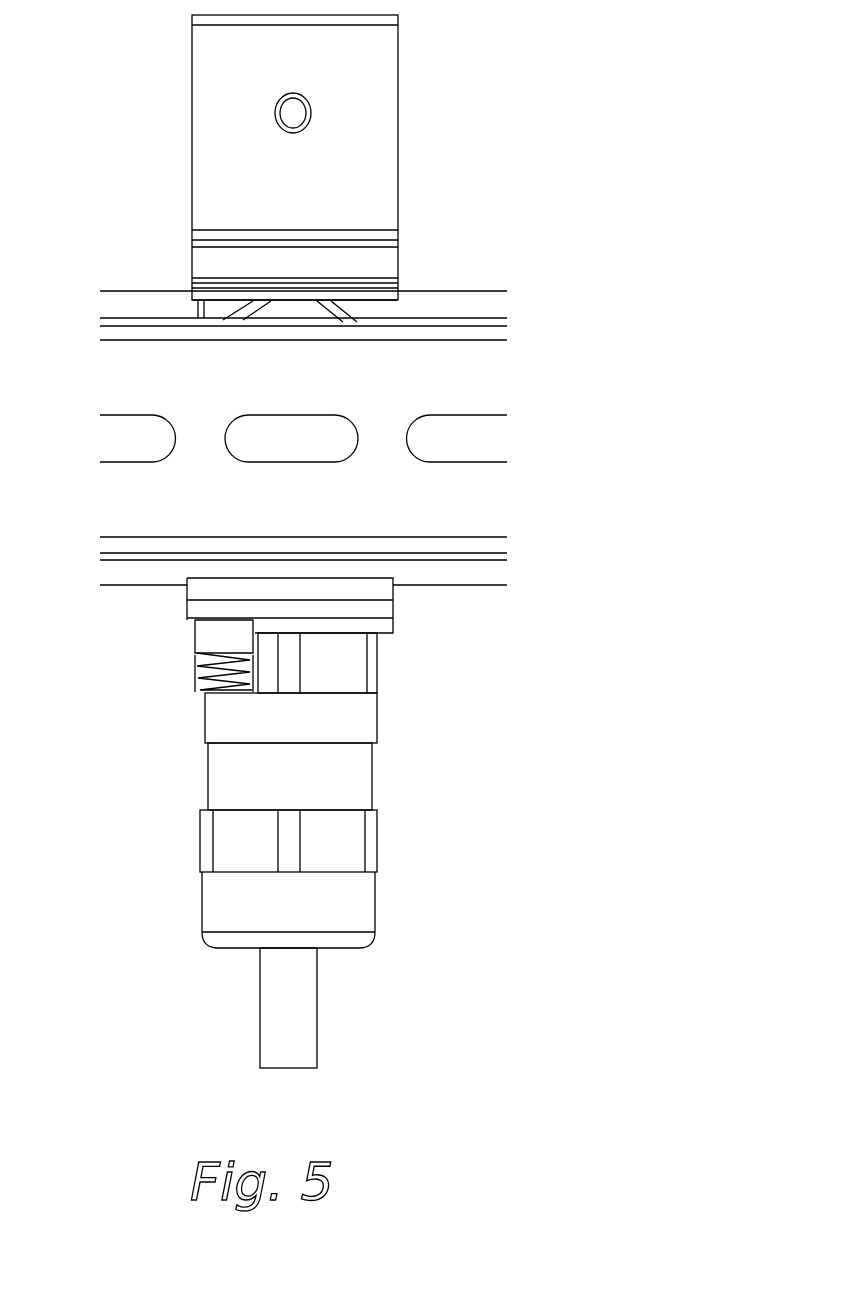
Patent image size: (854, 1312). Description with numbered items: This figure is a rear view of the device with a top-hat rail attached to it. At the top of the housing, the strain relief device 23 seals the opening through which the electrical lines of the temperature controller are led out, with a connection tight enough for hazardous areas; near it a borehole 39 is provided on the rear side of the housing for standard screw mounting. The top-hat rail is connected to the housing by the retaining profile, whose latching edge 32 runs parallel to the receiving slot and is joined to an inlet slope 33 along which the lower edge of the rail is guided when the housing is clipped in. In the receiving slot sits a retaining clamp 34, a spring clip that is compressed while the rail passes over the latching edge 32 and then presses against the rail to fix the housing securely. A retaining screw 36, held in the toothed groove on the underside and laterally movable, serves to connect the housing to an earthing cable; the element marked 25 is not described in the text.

The strain relief device 23 is at (377, 832).
The block 25 is at (221, 182).
The latching edge 32 is at (365, 580).
The inlet slope 33 is at (347, 592).
The retaining clamp 34 is at (348, 321).
The retaining screw 36 is at (222, 681).
The borehole 39 is at (294, 113).